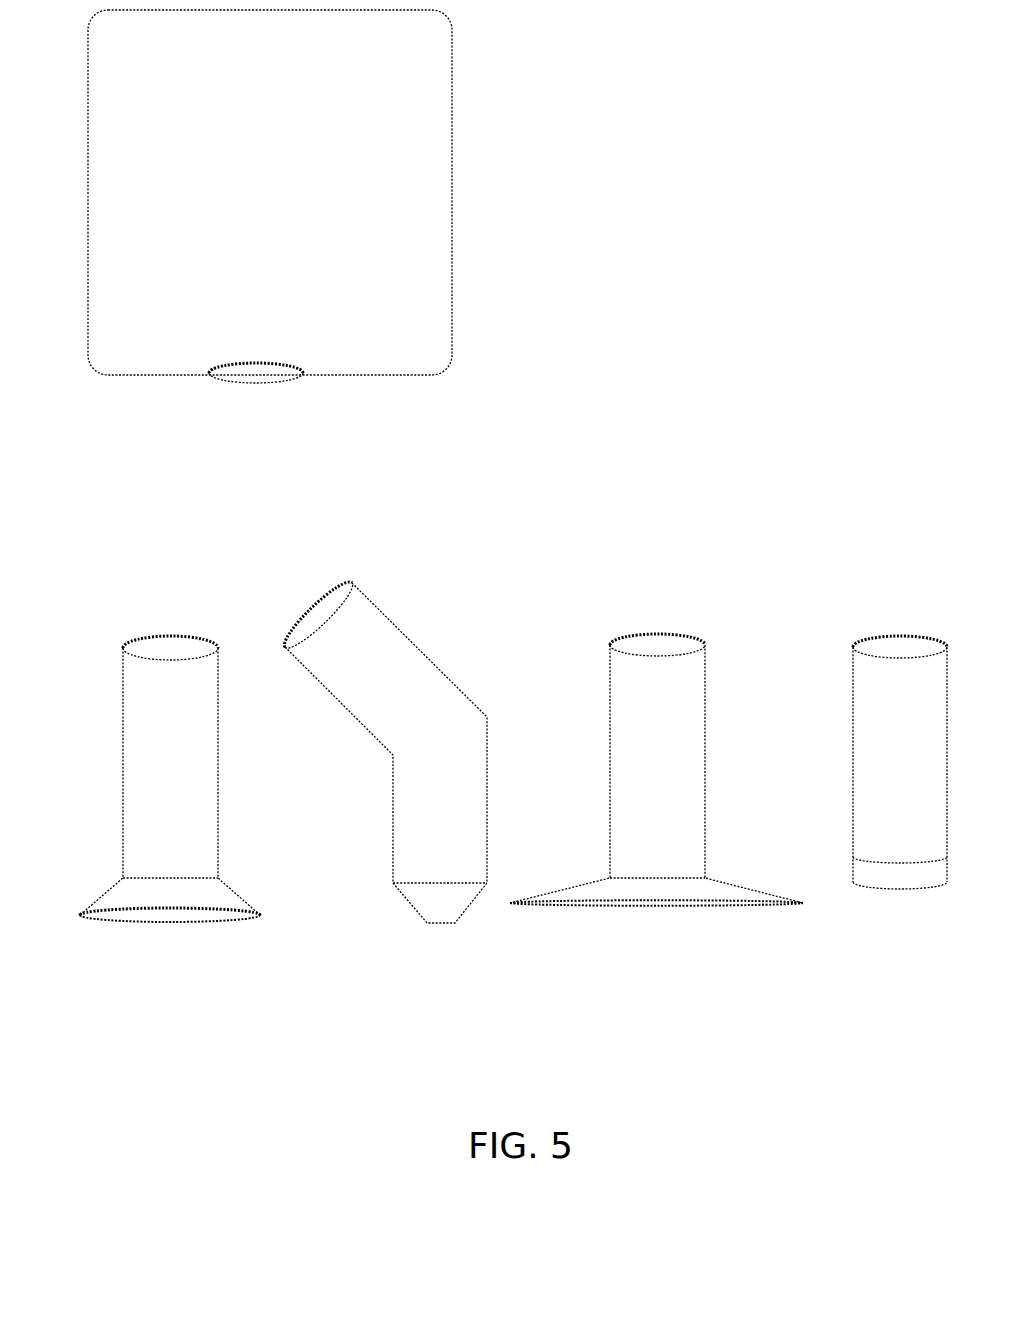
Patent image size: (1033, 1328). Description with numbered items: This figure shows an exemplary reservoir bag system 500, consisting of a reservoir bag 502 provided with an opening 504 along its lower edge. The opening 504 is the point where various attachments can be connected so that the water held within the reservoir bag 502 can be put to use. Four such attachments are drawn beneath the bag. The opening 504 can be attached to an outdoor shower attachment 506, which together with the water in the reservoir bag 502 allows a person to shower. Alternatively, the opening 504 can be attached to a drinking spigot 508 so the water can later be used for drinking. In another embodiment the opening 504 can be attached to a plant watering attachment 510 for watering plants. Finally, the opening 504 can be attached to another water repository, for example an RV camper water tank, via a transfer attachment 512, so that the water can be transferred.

The reservoir bag system 500 is at (205, 1036).
The reservoir bag 502 is at (110, 376).
The opening 504 is at (217, 382).
The outdoor shower attachment 506 is at (120, 795).
The drinking spigot 508 is at (393, 795).
The plant watering attachment 510 is at (610, 790).
The transfer attachment 512 is at (853, 775).